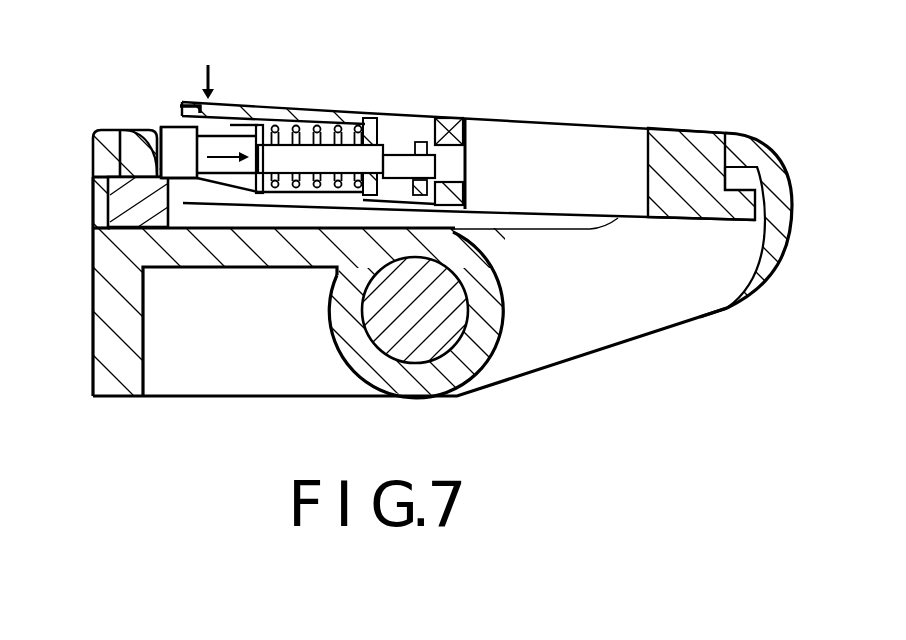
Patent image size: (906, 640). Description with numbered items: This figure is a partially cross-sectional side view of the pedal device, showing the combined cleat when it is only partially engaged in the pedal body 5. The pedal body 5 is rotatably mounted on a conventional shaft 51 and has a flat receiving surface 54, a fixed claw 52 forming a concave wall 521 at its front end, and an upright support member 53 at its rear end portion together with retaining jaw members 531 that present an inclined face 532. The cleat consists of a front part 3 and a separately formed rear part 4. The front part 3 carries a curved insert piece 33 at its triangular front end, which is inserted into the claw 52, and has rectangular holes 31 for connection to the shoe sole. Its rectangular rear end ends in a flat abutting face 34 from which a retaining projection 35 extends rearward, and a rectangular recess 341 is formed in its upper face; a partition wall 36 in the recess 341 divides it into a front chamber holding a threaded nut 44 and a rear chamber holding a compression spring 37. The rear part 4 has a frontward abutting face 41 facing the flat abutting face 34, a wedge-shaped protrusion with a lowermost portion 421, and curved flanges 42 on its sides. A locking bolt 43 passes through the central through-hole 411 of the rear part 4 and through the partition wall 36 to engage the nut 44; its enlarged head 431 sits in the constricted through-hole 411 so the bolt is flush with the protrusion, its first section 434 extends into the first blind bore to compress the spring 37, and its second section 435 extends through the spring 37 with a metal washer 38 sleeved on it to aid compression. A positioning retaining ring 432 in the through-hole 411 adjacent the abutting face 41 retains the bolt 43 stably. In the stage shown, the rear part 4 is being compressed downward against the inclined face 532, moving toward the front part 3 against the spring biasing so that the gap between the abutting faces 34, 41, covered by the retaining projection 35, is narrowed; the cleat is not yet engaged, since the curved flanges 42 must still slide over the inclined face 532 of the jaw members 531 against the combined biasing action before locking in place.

The front part 3 is at (453, 320).
The rectangular holes 31 is at (588, 148).
The curved insert piece 33 is at (787, 250).
The flat abutting face 34 is at (346, 101).
The frontward abutting face 41 is at (346, 161).
The retaining projection 35 is at (240, 108).
The partition wall 36 is at (420, 125).
The compression spring 37 is at (372, 114).
The metal washer 38 is at (292, 115).
The rectangular recess 341 is at (441, 118).
The rear part 4 is at (232, 200).
The central through-hole 411 is at (215, 106).
The curved flanges 42 is at (178, 183).
The lowermost portion 421 is at (107, 227).
The locking bolt 43 is at (158, 128).
The enlarged head 431 is at (105, 203).
The positioning retaining ring 432 is at (258, 112).
The first section 434 is at (210, 165).
The second section 435 is at (333, 160).
The threaded nut 44 is at (510, 134).
The pedal body 5 is at (453, 320).
The shaft 51 is at (415, 356).
The fixed claw 52 is at (772, 162).
The concave wall 521 is at (737, 180).
The upright support member 53 is at (97, 152).
The retaining jaw members 531 is at (128, 160).
The inclined face 532 is at (141, 126).
The flat receiving surface 54 is at (480, 233).